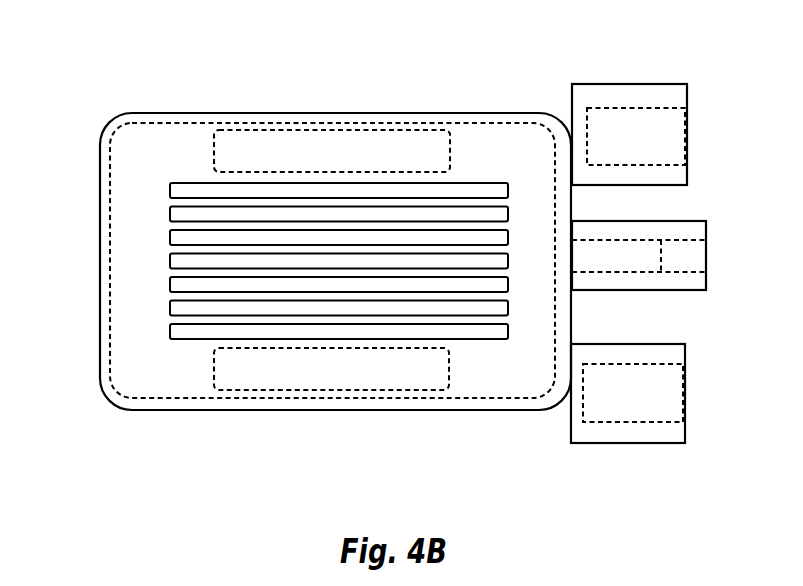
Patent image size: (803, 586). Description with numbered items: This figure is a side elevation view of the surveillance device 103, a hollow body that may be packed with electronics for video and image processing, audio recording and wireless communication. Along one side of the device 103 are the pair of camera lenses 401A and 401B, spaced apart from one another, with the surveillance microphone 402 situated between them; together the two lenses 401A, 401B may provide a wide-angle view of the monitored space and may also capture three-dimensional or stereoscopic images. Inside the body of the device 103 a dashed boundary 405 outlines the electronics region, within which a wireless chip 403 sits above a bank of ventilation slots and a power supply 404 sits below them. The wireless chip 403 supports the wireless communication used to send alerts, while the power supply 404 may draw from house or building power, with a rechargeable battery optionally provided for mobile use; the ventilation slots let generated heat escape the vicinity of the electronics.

The surveillance device 103 is at (333, 113).
The circuit board / inner boundary 405 is at (508, 123).
The wireless chip 403 is at (214, 148).
The power supply 404 is at (214, 372).
The camera lens 401A is at (631, 84).
The camera lens 401B is at (645, 443).
The surveillance microphone 402 is at (706, 233).